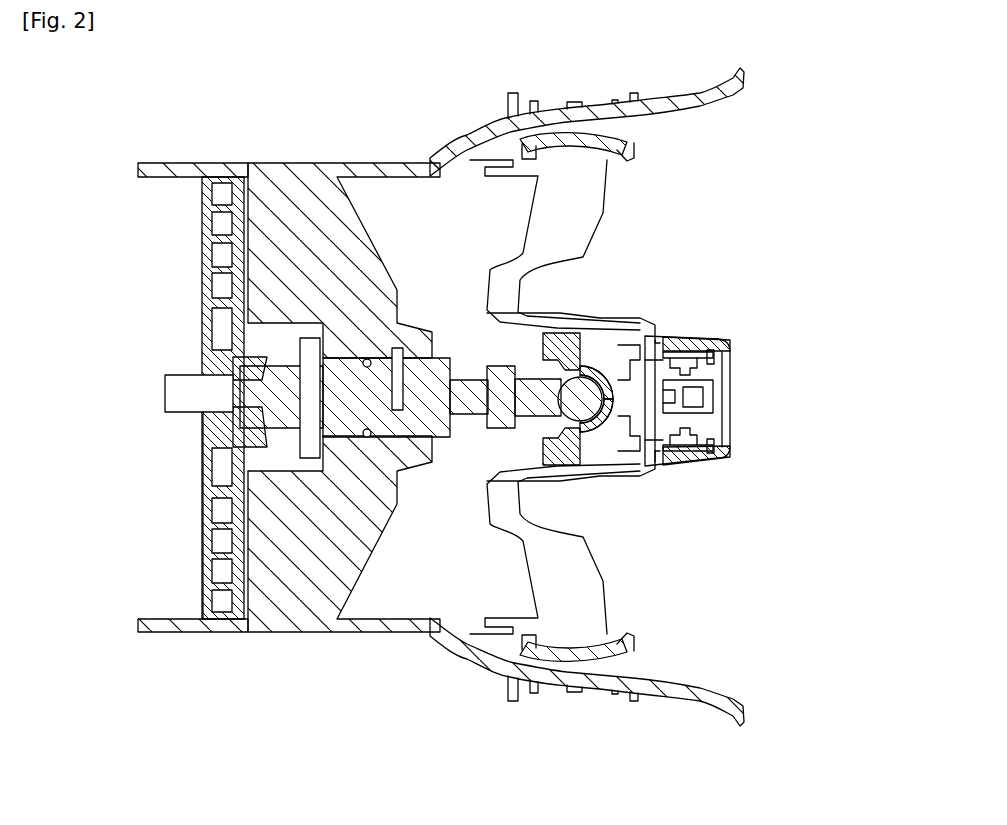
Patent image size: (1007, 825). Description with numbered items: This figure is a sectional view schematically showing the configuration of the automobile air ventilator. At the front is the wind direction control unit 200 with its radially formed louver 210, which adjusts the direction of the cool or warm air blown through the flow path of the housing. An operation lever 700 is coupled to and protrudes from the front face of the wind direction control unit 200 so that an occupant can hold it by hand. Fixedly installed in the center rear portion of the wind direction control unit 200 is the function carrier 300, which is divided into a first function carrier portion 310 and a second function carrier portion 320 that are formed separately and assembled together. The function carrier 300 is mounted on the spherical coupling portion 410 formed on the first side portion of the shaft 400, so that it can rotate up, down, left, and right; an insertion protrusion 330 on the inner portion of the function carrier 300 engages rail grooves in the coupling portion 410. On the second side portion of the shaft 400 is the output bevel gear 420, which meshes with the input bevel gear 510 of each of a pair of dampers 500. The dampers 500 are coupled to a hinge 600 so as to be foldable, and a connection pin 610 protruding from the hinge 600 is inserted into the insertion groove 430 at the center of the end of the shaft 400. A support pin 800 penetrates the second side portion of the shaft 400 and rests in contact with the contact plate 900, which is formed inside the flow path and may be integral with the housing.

The wind direction control unit 200 is at (603, 632).
The louver 210 is at (593, 193).
The function carrier 300 is at (662, 332).
The first function carrier portion 310 is at (557, 348).
The second function carrier portion 320 is at (653, 340).
The insertion protrusion 330 is at (565, 348).
The shaft 400 is at (433, 410).
The coupling portion 410 is at (553, 435).
The output bevel gear 420 is at (245, 460).
The insertion groove 430 is at (312, 342).
The damper 500 is at (202, 222).
The input bevel gear 510 is at (263, 357).
The hinge 600 is at (165, 377).
The connection pin 610 is at (240, 425).
The operation lever 700 is at (707, 340).
The support pin 800 is at (323, 343).
The contact plate 900 is at (267, 550).